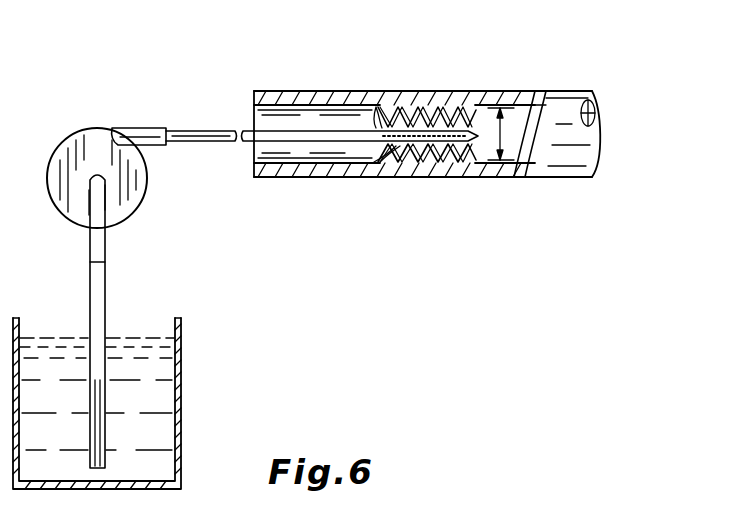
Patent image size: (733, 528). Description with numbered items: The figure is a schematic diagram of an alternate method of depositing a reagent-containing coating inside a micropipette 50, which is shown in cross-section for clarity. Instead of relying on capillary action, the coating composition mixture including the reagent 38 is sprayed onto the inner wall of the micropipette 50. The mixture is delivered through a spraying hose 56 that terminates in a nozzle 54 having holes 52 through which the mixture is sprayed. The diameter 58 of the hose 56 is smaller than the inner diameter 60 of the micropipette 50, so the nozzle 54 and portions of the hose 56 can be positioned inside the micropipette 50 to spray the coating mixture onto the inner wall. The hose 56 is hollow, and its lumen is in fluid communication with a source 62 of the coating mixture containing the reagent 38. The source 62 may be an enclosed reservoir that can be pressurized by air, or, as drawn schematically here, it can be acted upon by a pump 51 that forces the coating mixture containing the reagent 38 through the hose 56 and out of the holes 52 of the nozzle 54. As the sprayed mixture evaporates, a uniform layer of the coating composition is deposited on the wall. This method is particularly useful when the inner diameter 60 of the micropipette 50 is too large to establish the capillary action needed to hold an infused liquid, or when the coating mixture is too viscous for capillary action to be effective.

The reagent 38 is at (458, 92).
The micropipette 50 is at (508, 70).
The pump 51 is at (137, 176).
The holes 52 is at (392, 148).
The nozzle 54 is at (392, 92).
The spraying hose 56 is at (172, 128).
The diameter of hose 58 is at (208, 143).
The inner diameter of micropipette 60 is at (500, 143).
The source 62 is at (181, 418).